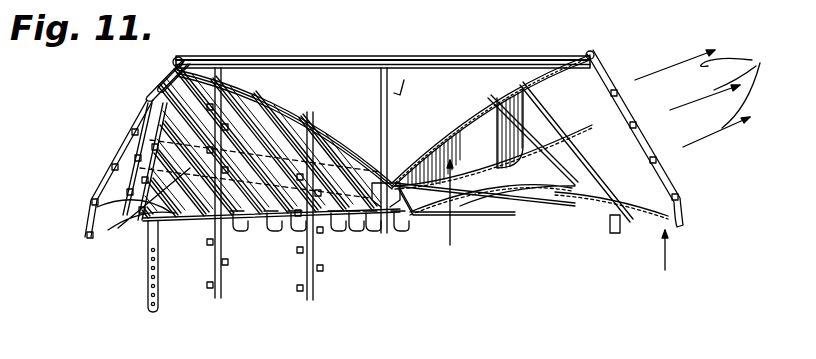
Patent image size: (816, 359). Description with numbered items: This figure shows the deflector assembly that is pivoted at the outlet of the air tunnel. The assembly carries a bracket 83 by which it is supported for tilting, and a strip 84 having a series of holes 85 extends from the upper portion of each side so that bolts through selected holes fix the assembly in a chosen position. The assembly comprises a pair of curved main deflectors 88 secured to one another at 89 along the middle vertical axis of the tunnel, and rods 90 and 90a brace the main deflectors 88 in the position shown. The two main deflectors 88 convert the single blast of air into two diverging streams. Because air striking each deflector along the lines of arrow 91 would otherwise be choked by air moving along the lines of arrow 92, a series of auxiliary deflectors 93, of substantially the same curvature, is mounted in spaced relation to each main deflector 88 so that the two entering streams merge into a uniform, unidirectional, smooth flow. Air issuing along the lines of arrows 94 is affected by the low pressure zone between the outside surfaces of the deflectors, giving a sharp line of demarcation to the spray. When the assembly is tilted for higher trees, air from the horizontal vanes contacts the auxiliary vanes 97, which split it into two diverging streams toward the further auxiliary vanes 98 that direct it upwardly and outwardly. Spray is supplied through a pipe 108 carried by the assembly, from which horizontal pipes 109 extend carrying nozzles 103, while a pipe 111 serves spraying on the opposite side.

The bracket 83 is at (170, 222).
The strip 84 is at (148, 270).
The holes 85 is at (150, 297).
The main deflectors 88 is at (320, 122).
The securing point of main deflectors 89 is at (376, 168).
The rod 90 is at (400, 56).
The rod 90a is at (397, 180).
The arrow 91 is at (452, 238).
The arrow 92 is at (665, 270).
The auxiliary deflectors 93 is at (165, 142).
The arrows 94 is at (705, 96).
The auxiliary vanes 97 is at (268, 228).
The auxiliary vanes 98 is at (148, 93).
The nozzles 103 is at (87, 233).
The pipe 108 is at (184, 54).
The horizontal pipes 109 is at (125, 238).
The pipe 111 is at (593, 52).